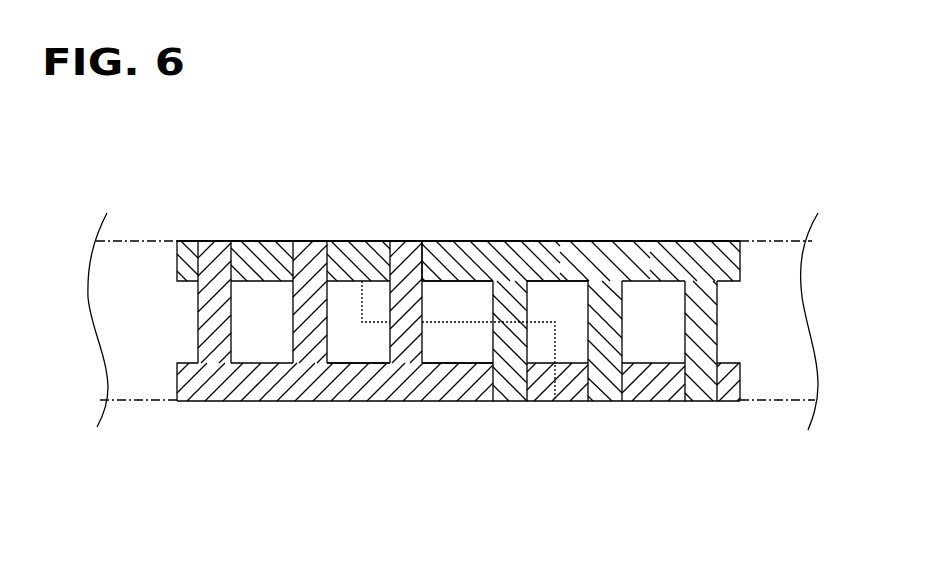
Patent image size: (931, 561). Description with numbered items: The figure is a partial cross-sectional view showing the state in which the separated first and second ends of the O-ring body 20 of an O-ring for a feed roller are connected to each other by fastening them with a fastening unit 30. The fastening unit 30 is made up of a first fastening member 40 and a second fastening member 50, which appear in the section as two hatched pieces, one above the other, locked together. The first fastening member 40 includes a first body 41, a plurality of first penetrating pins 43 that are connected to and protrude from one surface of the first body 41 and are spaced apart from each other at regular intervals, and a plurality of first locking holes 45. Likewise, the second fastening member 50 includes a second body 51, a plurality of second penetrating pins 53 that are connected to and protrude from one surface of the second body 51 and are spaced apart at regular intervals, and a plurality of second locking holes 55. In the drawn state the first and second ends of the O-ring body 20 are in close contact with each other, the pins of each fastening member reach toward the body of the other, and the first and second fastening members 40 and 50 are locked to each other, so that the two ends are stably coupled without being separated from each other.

The O-ring body 20 is at (786, 400).
The fastening unit 30 is at (593, 167).
The first fastening member 40 is at (481, 242).
The first body 41 is at (529, 298).
The first penetrating pins 43 is at (560, 290).
The first locking holes 45 is at (436, 243).
The second fastening member 50 is at (327, 401).
The second body 51 is at (411, 401).
The second penetrating pins 53 is at (400, 240).
The second locking holes 55 is at (668, 400).